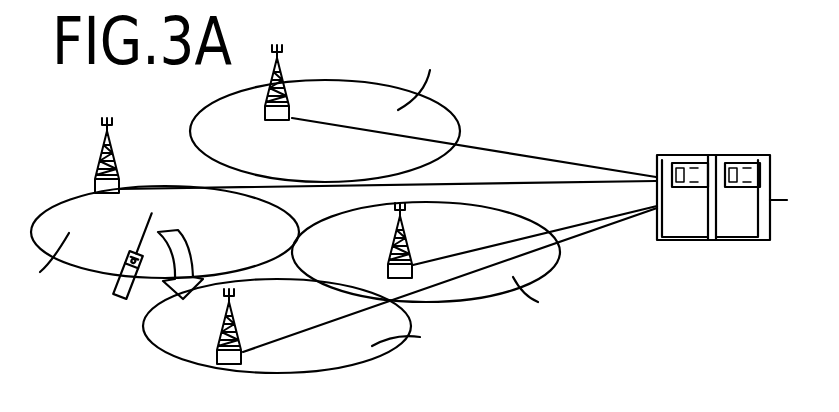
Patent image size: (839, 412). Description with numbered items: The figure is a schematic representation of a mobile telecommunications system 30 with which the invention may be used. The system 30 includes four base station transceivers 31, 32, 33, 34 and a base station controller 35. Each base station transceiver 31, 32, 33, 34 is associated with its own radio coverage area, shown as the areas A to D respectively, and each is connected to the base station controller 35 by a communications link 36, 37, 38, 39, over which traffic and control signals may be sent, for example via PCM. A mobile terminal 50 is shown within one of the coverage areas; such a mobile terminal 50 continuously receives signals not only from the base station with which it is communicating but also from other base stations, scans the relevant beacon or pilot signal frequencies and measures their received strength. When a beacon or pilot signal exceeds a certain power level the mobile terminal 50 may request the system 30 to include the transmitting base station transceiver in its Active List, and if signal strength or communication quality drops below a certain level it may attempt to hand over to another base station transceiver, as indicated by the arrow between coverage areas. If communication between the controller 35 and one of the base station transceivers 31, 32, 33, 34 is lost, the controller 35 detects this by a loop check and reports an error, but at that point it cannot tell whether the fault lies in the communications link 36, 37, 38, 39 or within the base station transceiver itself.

The mobile telecommunications system 30 is at (405, 216).
The base station transceiver 31 is at (115, 150).
The base station transceiver 32 is at (215, 330).
The base station transceiver 33 is at (388, 240).
The base station transceiver 34 is at (287, 78).
The base station controller 35 is at (712, 157).
The communications link 36 is at (536, 186).
The communications link 37 is at (570, 232).
The communications link 38 is at (600, 222).
The communications link 39 is at (500, 150).
The mobile terminal 50 is at (110, 295).